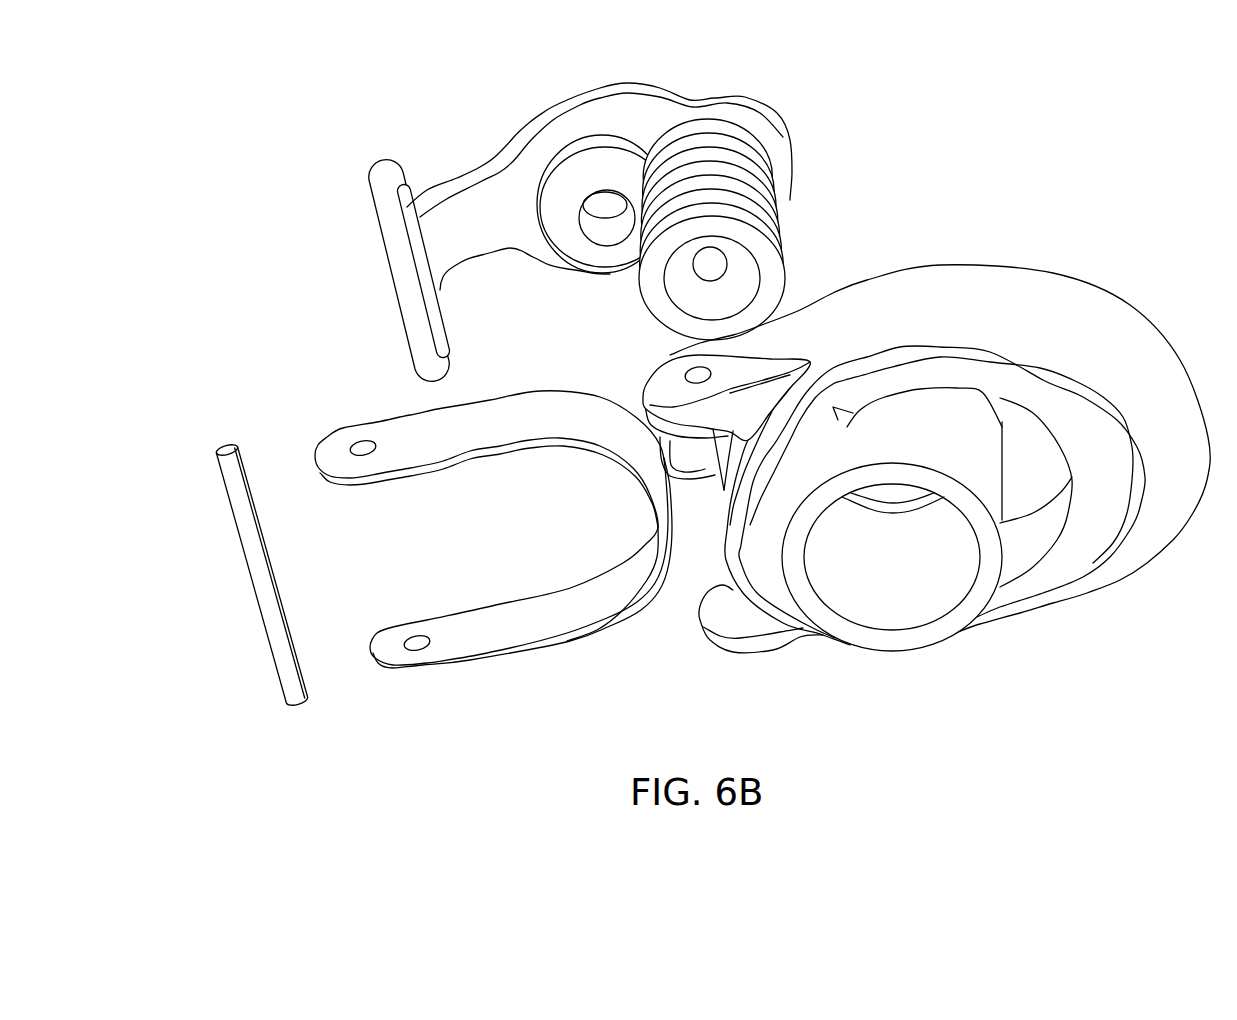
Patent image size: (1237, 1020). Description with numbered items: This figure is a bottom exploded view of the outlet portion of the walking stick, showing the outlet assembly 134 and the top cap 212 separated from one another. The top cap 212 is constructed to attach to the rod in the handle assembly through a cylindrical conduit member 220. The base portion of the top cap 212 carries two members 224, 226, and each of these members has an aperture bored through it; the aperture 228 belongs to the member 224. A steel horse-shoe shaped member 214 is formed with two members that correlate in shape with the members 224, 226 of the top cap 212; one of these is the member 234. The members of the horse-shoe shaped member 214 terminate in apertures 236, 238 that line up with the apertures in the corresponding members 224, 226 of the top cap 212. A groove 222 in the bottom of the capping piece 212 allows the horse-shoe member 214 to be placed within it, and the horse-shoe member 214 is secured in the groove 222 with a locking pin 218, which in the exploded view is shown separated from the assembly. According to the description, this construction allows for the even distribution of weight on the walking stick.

The outlet assembly 134 is at (826, 128).
The top cap 212 is at (886, 447).
The horse-shoe shaped member 214 is at (615, 614).
The locking pin 218 is at (260, 593).
The cylindrical conduit member 220 is at (930, 603).
The groove 222 is at (1045, 545).
The member 224 is at (686, 413).
The member 226 is at (751, 645).
The aperture 228 is at (712, 371).
The member 234 is at (473, 633).
The aperture 236 is at (365, 458).
The aperture 238 is at (418, 640).